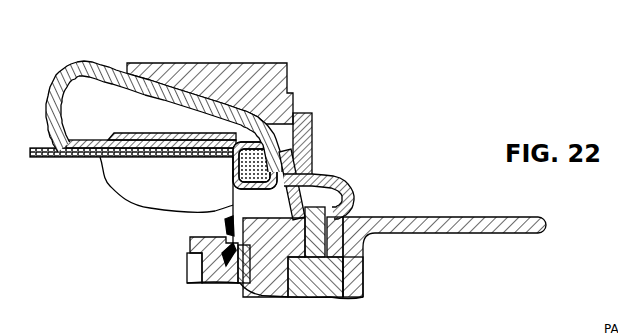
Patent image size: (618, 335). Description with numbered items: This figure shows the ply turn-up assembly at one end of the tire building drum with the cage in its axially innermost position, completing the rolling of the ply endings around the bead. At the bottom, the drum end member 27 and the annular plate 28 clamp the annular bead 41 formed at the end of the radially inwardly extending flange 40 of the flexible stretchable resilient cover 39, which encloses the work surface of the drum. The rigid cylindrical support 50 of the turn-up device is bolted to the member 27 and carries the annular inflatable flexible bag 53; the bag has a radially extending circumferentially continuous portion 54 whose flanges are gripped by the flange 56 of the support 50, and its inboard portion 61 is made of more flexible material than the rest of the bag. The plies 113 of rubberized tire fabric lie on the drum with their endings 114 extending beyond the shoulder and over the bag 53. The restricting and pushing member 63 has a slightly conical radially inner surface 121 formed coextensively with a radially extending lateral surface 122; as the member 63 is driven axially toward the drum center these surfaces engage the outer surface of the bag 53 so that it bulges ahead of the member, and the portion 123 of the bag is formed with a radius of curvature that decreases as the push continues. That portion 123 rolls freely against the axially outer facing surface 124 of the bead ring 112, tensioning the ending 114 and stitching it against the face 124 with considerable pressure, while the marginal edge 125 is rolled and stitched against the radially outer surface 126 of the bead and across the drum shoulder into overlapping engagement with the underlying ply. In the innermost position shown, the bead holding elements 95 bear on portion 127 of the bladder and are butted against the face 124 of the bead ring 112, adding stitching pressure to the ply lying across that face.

The member 27 is at (200, 268).
The annular plate 28 is at (246, 283).
The cover 39 is at (130, 181).
The flange 40 is at (225, 229).
The annular bead 41 is at (230, 262).
The cylindrical support 50 is at (538, 225).
The inflatable flexible bag 53 is at (58, 88).
The radially extending portion 54 is at (365, 254).
The flange 56 is at (340, 222).
The inboard portion 61 is at (283, 190).
The restricting and pushing member 63 is at (182, 63).
The bead holding element 95 is at (312, 120).
The bead ring 112 is at (244, 170).
The plies of rubberized tire fabric 113 is at (38, 152).
The ending 114 is at (164, 152).
The radially inner surface 121 is at (214, 72).
The lateral surface 122 is at (283, 110).
The portion of the bag 123 is at (88, 62).
The axially outer facing surface 124 is at (283, 163).
The marginal edge 125 is at (216, 142).
The radially outer surface 126 is at (258, 152).
The portion of the bladder 127 is at (305, 181).